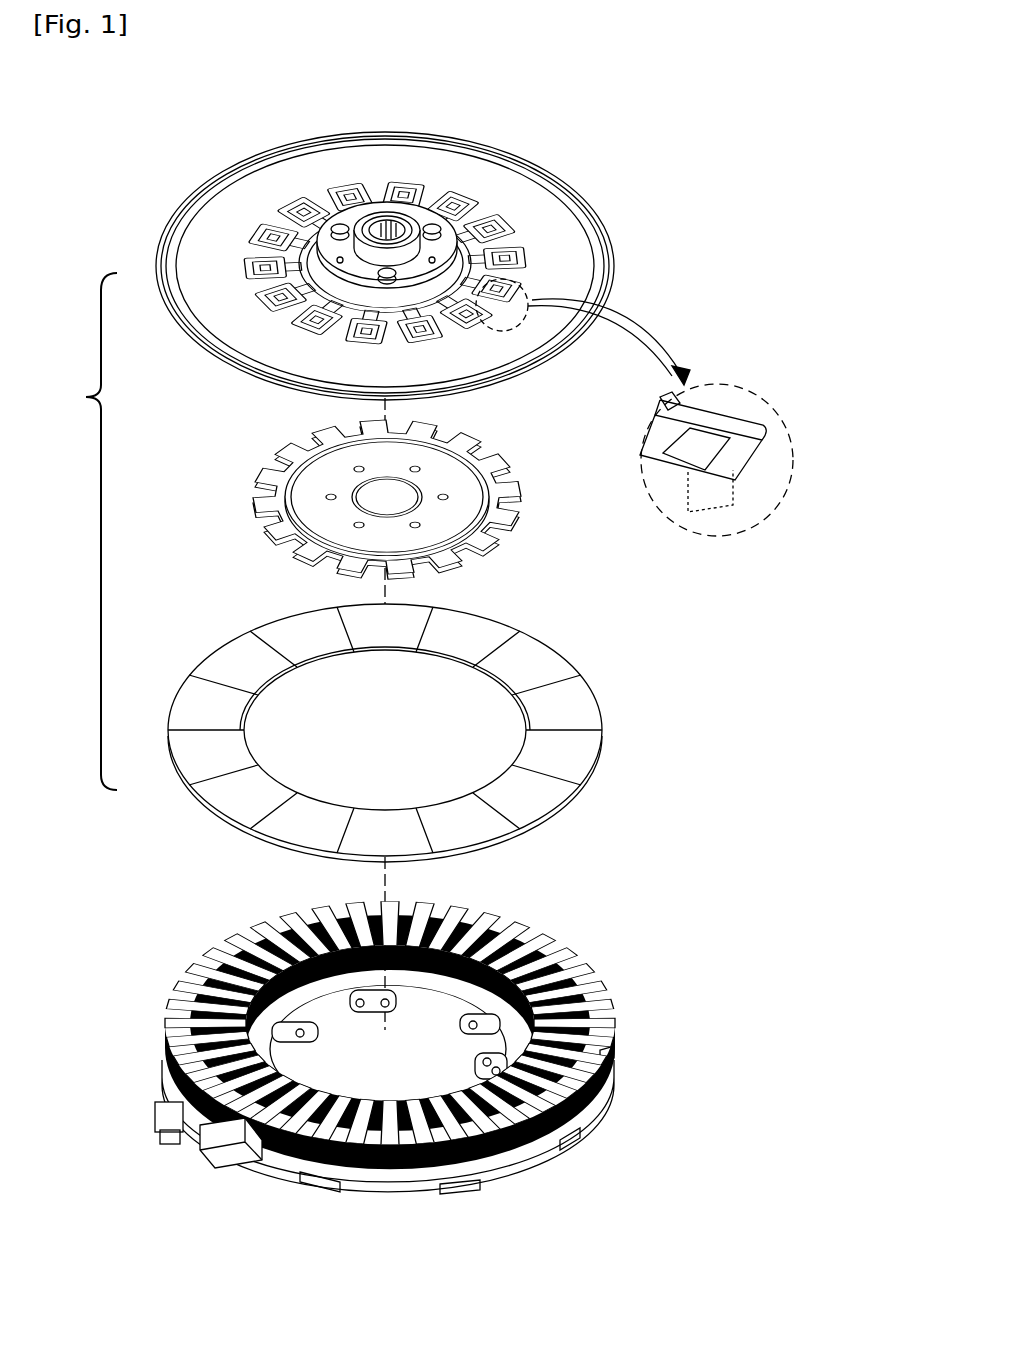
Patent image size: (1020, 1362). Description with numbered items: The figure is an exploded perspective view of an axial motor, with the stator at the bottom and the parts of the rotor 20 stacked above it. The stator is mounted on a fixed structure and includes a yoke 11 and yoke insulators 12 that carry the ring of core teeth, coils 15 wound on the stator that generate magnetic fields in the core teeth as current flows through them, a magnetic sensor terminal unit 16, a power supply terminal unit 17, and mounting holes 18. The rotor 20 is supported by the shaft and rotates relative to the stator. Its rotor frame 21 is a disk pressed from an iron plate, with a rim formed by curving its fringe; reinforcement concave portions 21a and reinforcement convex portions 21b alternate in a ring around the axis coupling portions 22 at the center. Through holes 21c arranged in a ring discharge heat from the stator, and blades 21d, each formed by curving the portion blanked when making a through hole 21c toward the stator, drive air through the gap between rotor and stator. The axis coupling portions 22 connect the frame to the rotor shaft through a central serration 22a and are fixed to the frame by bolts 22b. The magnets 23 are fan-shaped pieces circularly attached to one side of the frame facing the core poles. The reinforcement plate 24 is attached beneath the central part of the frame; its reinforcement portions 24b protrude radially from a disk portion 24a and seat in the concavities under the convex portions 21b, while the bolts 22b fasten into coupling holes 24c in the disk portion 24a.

The yoke 11 is at (411, 1060).
The yoke insulators 12 is at (356, 1060).
The coils 15 is at (507, 1156).
The magnetic sensor terminal unit 16 is at (233, 1154).
The power supply terminal unit 17 is at (158, 1135).
The mounting holes 18 is at (560, 952).
The rotor 20 is at (445, 470).
The rotor frame 21 is at (525, 377).
The reinforcement concave portions 21a is at (517, 266).
The reinforcement convex portions 21b is at (495, 212).
The through holes 21c is at (507, 238).
The blades 21d is at (753, 486).
The axis coupling portions 22 is at (396, 211).
The serration 22a is at (387, 220).
The bolts 22b is at (445, 198).
The magnets 23 is at (602, 730).
The reinforcement plate 24 is at (395, 490).
The disk portion 24a is at (401, 497).
The reinforcement portions 24b is at (387, 497).
The coupling holes 24c is at (373, 497).